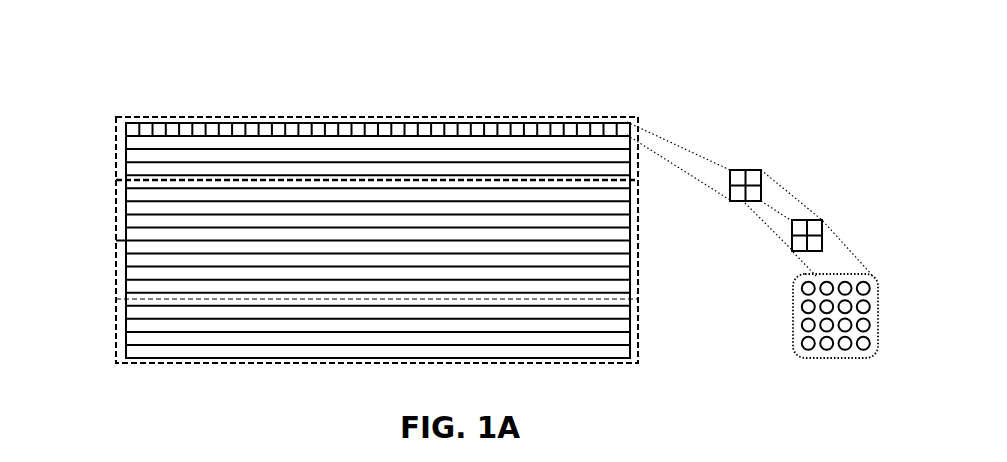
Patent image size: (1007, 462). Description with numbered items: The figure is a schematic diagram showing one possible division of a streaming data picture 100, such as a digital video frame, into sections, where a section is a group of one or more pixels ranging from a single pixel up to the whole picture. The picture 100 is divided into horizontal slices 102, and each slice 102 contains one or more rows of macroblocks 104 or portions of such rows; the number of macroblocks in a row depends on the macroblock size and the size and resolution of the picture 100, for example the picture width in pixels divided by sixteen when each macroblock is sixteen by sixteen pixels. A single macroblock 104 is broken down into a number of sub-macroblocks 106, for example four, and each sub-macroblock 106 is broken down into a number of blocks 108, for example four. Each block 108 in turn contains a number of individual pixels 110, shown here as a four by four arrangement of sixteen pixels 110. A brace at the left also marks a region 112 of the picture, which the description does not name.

The picture 100 is at (141, 60).
The slice 102 is at (123, 128).
The macroblock 104 is at (735, 146).
The sub-macroblock 106 is at (834, 198).
The block 108 is at (812, 247).
The pixel 110 is at (844, 346).
The row section 112 is at (97, 118).